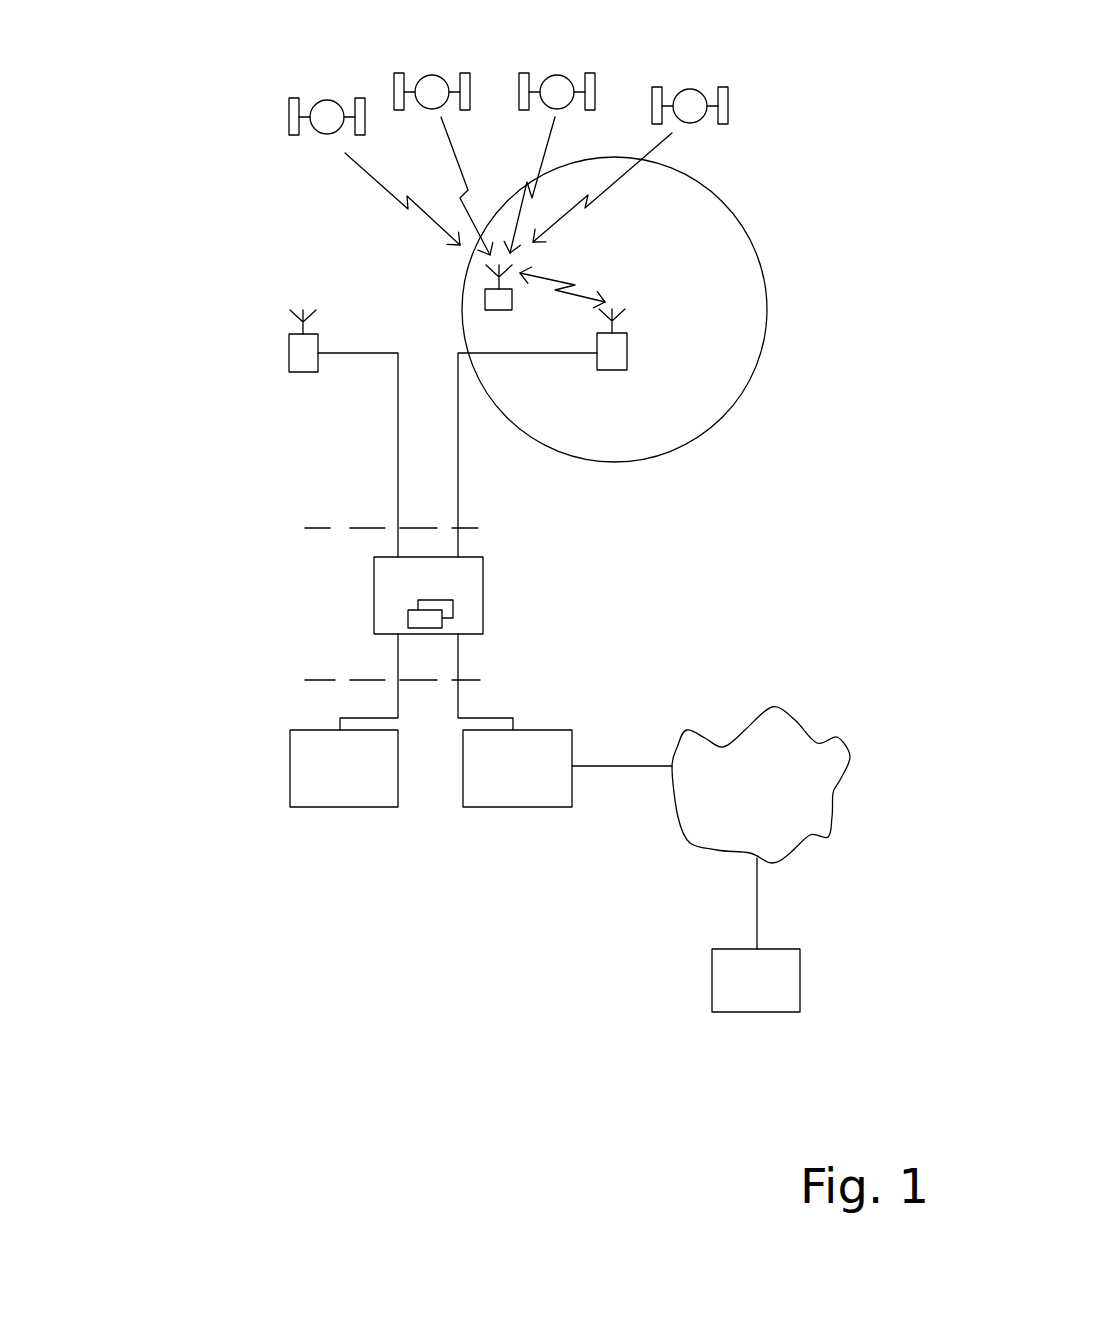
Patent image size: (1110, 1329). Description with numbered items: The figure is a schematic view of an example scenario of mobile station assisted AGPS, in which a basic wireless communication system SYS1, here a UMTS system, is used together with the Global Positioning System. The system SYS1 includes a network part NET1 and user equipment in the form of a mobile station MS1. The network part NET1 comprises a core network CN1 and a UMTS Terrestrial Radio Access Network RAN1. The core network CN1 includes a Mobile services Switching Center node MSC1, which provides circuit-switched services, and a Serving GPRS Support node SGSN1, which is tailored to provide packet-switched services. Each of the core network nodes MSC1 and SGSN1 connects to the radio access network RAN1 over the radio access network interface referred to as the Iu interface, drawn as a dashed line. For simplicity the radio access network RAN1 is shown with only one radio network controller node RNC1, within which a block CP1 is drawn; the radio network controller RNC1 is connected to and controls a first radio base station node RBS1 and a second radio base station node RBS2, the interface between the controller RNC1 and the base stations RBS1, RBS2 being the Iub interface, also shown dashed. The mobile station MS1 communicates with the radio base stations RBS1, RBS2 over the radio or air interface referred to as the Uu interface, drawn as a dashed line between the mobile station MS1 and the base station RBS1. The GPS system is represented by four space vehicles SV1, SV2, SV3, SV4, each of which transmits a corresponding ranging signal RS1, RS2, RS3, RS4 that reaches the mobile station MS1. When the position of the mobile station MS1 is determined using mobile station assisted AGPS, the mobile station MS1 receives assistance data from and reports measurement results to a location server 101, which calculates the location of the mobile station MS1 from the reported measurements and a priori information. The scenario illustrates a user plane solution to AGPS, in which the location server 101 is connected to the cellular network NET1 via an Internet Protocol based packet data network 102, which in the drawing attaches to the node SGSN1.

The space vehicle SV1 is at (323, 98).
The space vehicle SV2 is at (432, 75).
The space vehicle SV3 is at (557, 75).
The space vehicle SV4 is at (690, 89).
The ranging signal RS1 is at (390, 197).
The ranging signal RS2 is at (448, 167).
The ranging signal RS3 is at (547, 153).
The ranging signal RS4 is at (657, 143).
The wireless communication system SYS1 is at (233, 200).
The network part NET1 is at (140, 297).
The radio access network RAN1 is at (213, 387).
The core network CN1 is at (237, 748).
The mobile station MS1 is at (485, 293).
The Uu interface Uu is at (570, 252).
The first radio base station node RBS1 is at (627, 362).
The second radio base station node RBS2 is at (318, 362).
The Iub interface Iub is at (366, 527).
The Iu interface Iu is at (372, 684).
The radio network controller node RNC1 is at (374, 600).
The computer program / processing unit in RNC1 CP1 is at (447, 600).
The Mobile services Switching Center node MSC1 is at (387, 807).
The Serving GPRS Support node SGSN1 is at (558, 807).
The IP based packet data network 102 is at (823, 837).
The location server 101 is at (753, 1012).